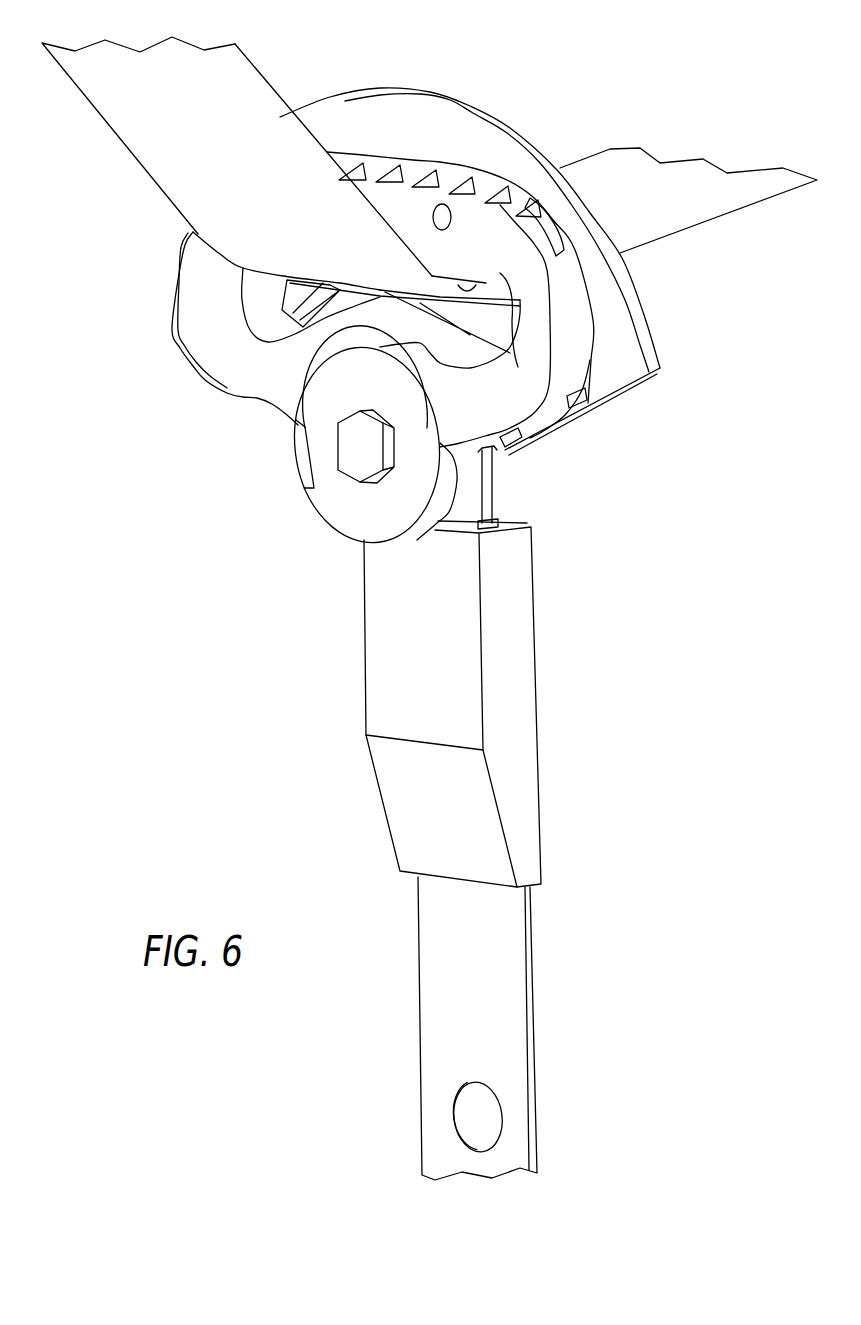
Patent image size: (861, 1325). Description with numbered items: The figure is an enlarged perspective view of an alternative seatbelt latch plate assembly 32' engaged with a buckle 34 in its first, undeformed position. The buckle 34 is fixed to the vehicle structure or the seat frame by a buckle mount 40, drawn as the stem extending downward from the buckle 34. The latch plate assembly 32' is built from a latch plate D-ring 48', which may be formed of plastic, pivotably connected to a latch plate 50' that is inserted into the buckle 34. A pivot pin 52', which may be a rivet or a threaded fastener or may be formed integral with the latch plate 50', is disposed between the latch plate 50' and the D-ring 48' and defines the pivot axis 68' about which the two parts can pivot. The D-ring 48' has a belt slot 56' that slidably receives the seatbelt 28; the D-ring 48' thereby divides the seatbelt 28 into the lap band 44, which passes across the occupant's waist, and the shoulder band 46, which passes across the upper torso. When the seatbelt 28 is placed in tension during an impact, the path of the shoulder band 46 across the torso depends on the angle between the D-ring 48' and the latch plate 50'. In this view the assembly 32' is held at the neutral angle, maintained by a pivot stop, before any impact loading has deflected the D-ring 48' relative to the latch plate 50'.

The seatbelt 28 is at (120, 145).
The shoulder band 46 is at (257, 63).
The lap band 44 is at (710, 221).
The belt slot 56' is at (428, 184).
The seatbelt latch plate assembly 32' is at (461, 271).
The pivot pin 52' is at (300, 407).
The latch plate D-ring 48' is at (365, 455).
The pivot axis 68' is at (278, 468).
The latch plate 50' is at (525, 487).
The seatbelt buckle 34 is at (536, 643).
The buckle mount 40 is at (537, 1013).